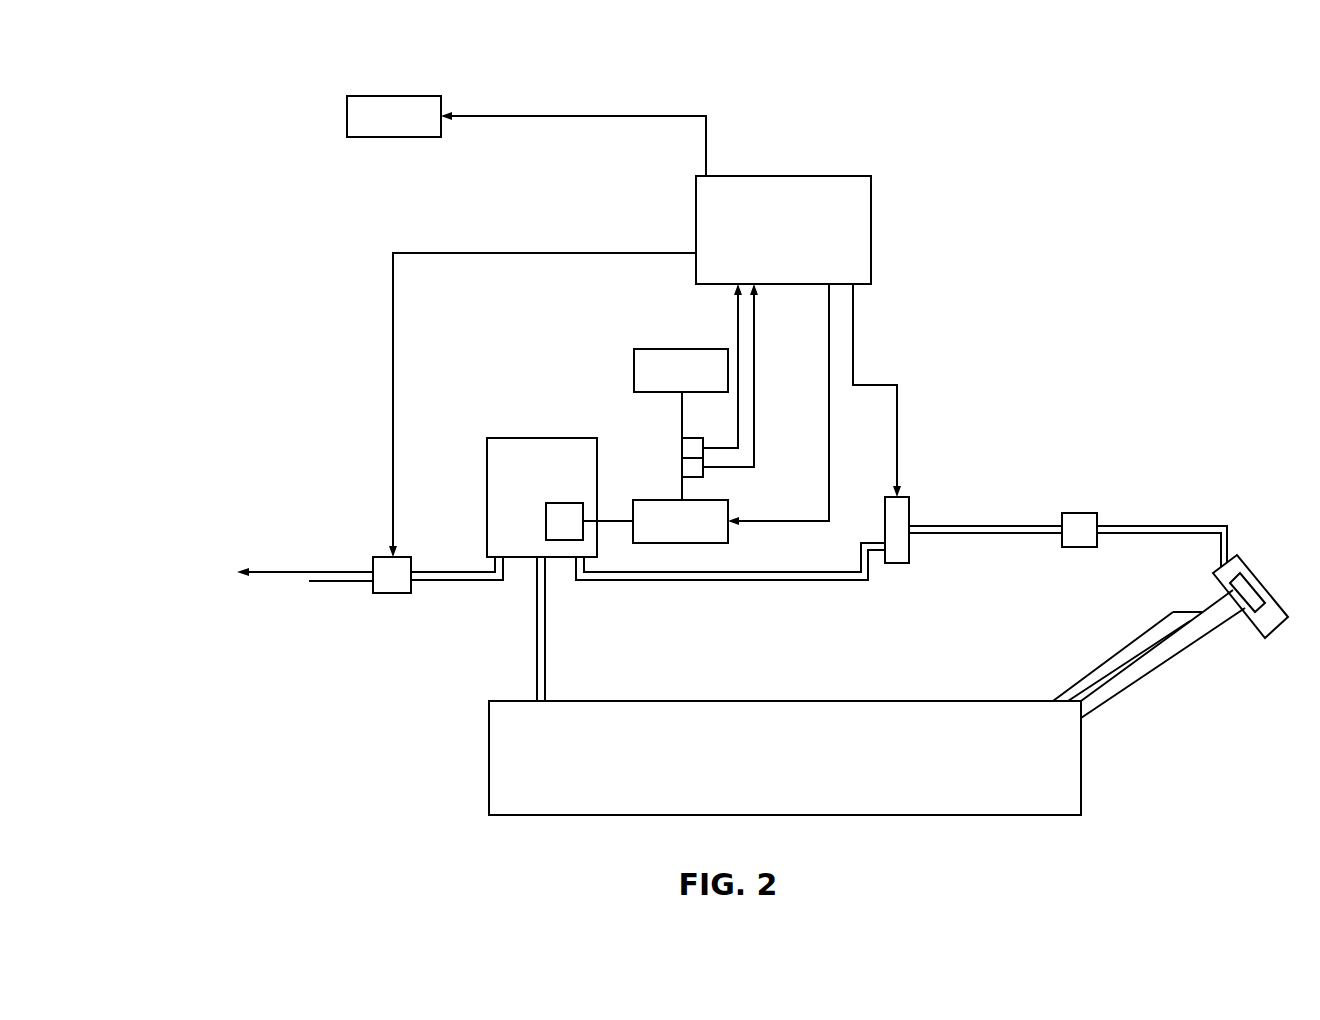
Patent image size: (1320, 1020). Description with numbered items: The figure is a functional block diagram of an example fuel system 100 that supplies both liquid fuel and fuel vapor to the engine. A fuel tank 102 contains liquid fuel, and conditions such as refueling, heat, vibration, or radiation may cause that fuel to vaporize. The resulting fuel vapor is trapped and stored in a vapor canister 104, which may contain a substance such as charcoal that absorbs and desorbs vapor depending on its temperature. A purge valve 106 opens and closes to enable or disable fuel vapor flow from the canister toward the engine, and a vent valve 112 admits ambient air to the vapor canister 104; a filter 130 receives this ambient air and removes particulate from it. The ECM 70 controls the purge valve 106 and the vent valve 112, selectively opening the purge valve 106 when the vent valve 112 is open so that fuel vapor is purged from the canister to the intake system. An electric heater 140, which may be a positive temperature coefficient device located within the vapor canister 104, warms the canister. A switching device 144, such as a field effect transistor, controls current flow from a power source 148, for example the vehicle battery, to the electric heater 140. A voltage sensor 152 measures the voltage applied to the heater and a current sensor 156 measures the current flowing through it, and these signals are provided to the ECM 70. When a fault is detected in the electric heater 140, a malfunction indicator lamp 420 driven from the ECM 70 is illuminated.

The fuel system 100 is at (208, 56).
The malfunction indicator lamp (MIL) 420 is at (392, 96).
The ECM 70 is at (779, 176).
The power source 148 is at (634, 367).
The voltage sensor 152 is at (690, 438).
The current sensor 156 is at (703, 477).
The vapor canister 104 is at (597, 462).
The electric heater 140 is at (567, 503).
The switching device 144 is at (728, 543).
The purge valve 106 is at (391, 593).
The vent valve 112 is at (891, 497).
The filter 130 is at (1082, 513).
The fuel tank 102 is at (779, 701).